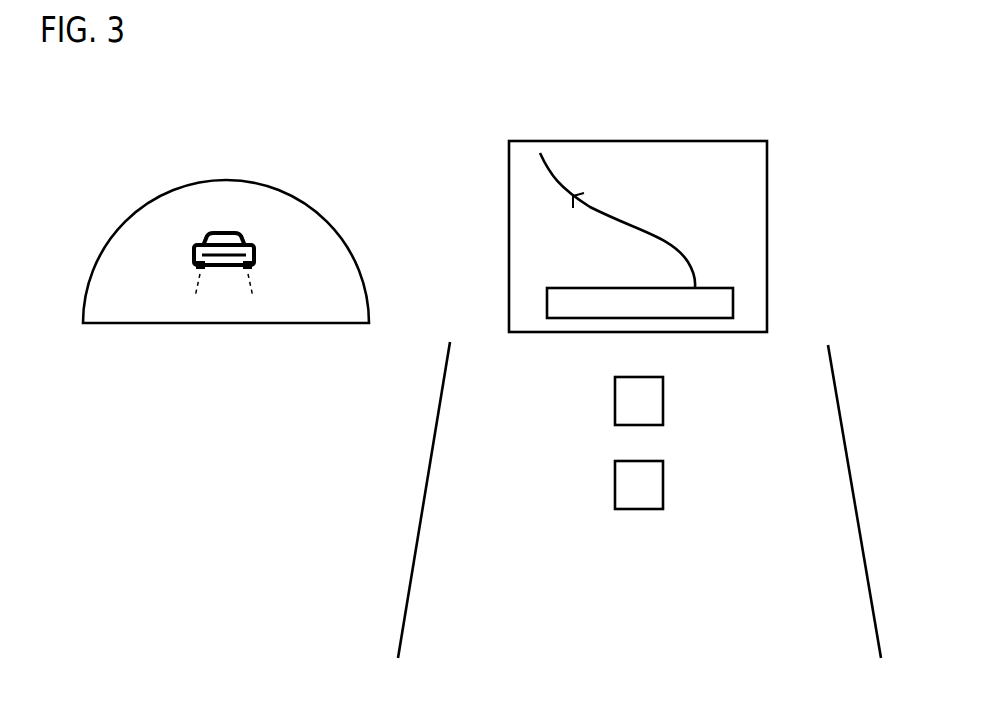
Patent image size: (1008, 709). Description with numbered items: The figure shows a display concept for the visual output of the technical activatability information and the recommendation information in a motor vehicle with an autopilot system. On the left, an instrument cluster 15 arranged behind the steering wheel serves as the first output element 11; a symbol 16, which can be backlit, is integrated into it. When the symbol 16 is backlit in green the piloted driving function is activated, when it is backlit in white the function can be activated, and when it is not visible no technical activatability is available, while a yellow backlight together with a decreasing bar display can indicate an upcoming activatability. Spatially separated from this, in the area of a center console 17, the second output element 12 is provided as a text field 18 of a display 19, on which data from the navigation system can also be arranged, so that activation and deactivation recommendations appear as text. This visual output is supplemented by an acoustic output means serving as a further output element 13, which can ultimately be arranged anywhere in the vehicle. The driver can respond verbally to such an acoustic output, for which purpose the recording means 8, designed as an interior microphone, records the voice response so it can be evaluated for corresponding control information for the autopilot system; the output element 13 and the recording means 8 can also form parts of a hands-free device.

The recording means 8 is at (663, 487).
The first output element 11 is at (183, 212).
The second output element 12 is at (740, 294).
The acoustic output means 13 is at (663, 407).
The instrument cluster 15 is at (295, 198).
The symbol 16 is at (231, 230).
The center console 17 is at (413, 567).
The text field 18 is at (547, 302).
The display 19 is at (509, 237).